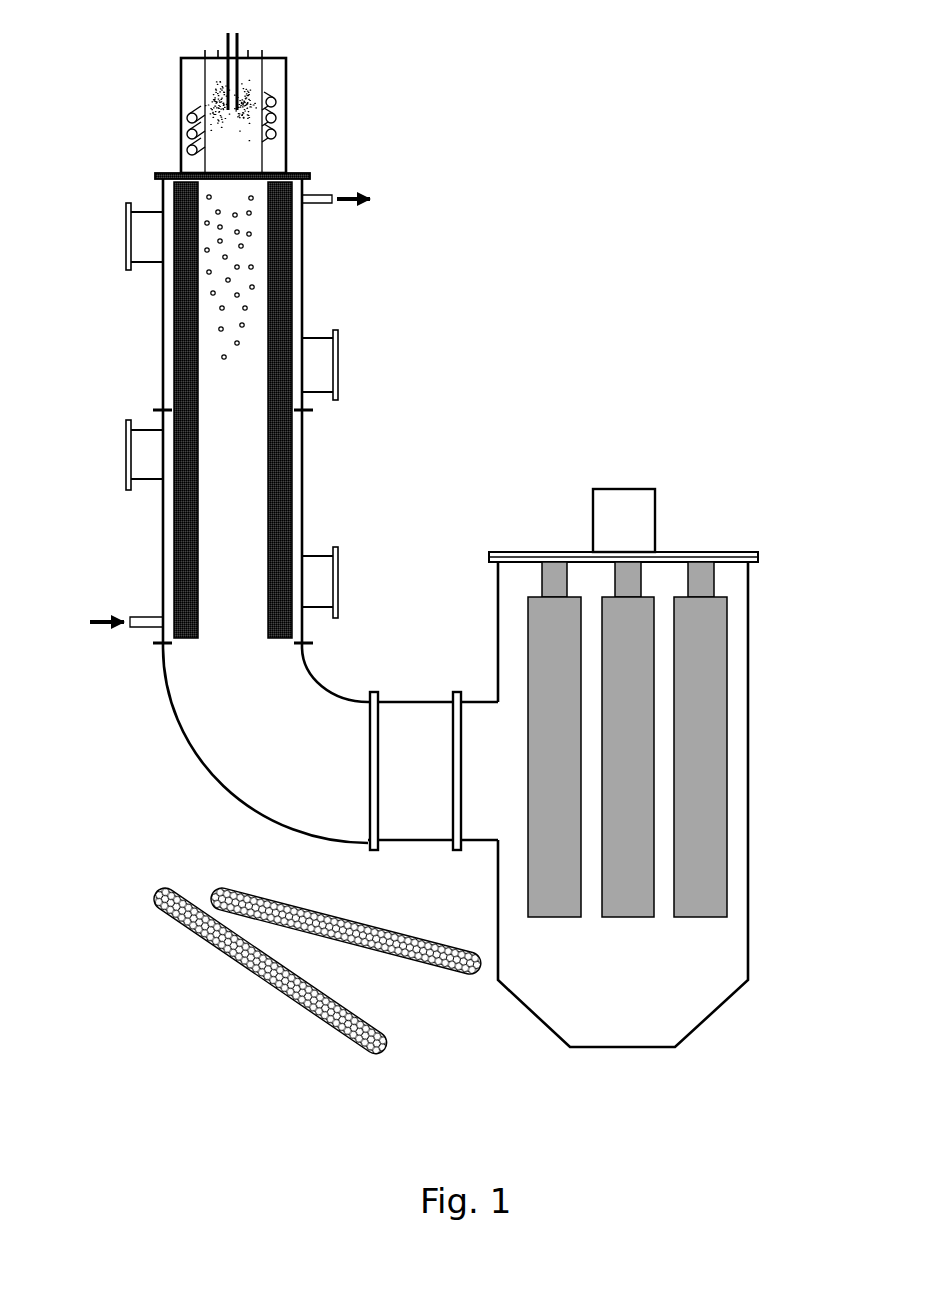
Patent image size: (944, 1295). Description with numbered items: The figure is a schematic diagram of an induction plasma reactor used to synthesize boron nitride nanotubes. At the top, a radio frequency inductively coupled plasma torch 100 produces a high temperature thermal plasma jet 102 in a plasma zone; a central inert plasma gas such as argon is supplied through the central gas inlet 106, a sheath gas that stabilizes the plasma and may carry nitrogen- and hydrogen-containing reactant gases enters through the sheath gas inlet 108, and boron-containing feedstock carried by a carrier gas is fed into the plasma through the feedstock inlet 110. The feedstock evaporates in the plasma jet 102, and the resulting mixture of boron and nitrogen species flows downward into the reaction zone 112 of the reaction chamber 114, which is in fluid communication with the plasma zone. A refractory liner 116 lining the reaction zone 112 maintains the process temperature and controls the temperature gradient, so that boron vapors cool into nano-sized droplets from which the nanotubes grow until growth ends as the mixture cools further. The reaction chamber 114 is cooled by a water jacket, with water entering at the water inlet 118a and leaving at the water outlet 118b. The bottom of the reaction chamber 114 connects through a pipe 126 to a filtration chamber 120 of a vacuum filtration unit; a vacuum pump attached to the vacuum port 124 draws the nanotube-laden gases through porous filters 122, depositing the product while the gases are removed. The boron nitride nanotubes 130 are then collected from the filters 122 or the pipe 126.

The inductively coupled plasma torch 100 is at (290, 86).
The thermal plasma jet 102 is at (222, 127).
The central gas inlet 106 is at (243, 53).
The sheath gas inlet 108 is at (212, 53).
The feedstock inlet 110 is at (232, 31).
The reaction zone 112 is at (222, 297).
The reaction chamber 114 is at (161, 340).
The refractory liner 116 is at (282, 370).
The water inlet 118a is at (105, 622).
The water outlet 118b is at (360, 199).
The filtration chamber 120 is at (751, 633).
The porous filters 122 is at (547, 800).
The vacuum port 124 is at (624, 489).
The pipe 126 is at (415, 815).
The boron nitride nanotubes 130 is at (291, 980).